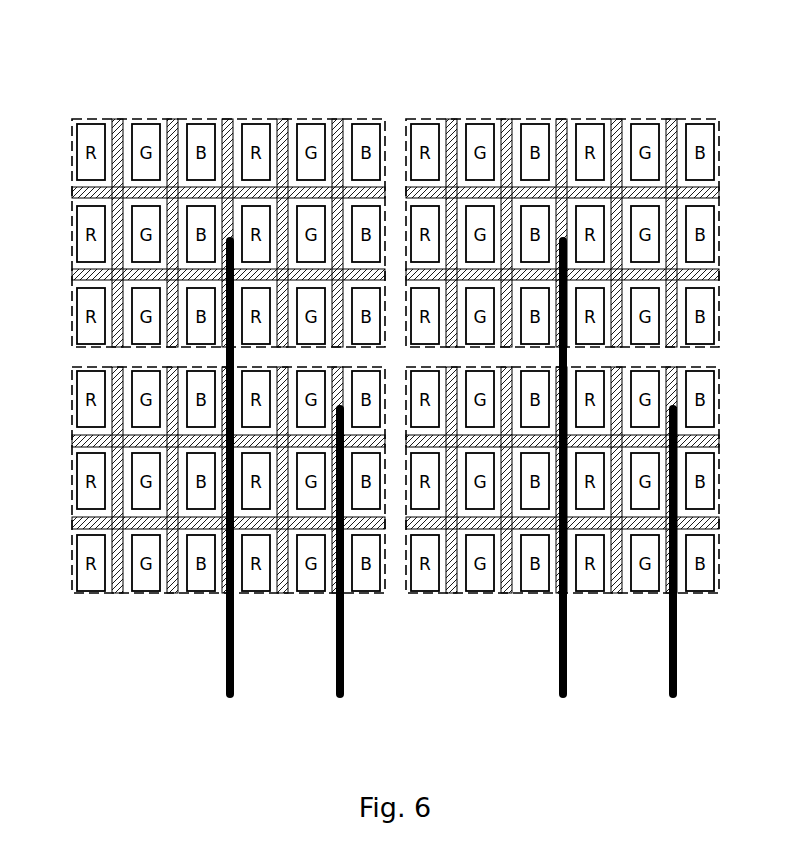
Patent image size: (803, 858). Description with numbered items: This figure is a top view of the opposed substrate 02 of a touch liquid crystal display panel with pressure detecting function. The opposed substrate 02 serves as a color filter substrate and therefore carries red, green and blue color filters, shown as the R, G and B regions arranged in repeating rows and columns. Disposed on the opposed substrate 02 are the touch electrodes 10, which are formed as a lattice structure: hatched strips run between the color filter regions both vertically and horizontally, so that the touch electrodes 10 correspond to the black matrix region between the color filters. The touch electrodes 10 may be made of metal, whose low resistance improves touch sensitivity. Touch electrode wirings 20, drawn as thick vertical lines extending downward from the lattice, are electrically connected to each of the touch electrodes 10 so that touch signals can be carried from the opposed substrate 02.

The opposed substrate 02 is at (160, 43).
The touch electrodes 10 is at (118, 119).
The touch electrode wirings 20 is at (224, 698).